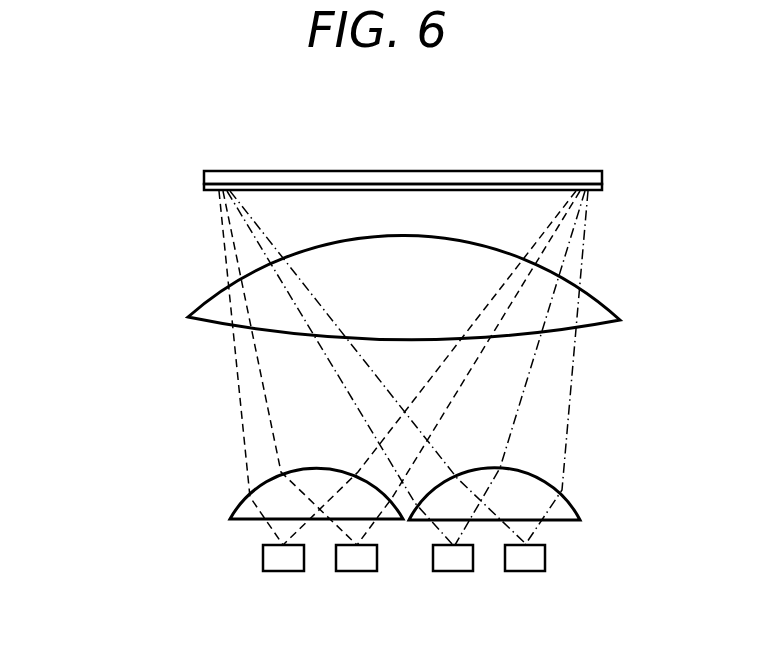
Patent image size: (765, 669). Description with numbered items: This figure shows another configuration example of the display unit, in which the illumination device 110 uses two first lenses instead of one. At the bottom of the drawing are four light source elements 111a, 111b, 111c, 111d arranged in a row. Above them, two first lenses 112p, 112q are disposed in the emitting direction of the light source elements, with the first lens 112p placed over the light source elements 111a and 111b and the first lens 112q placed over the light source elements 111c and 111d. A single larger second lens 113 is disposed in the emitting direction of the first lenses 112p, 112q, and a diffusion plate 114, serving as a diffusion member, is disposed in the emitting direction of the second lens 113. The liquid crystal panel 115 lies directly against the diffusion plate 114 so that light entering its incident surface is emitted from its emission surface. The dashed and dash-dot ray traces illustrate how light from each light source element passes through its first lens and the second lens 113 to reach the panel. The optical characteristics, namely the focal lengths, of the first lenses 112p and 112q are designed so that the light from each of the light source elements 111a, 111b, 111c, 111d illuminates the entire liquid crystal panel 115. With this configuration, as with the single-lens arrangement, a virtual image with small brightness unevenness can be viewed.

The illumination device 110 is at (87, 183).
The light source element 111a is at (275, 572).
The light source element 111b is at (365, 572).
The light source element 111c is at (445, 572).
The light source element 111d is at (530, 572).
The first lens 112p is at (242, 508).
The first lens 112q is at (580, 512).
The second lens 113 is at (190, 317).
The diffusion plate 114 is at (204, 186).
The liquid crystal panel 115 is at (204, 176).